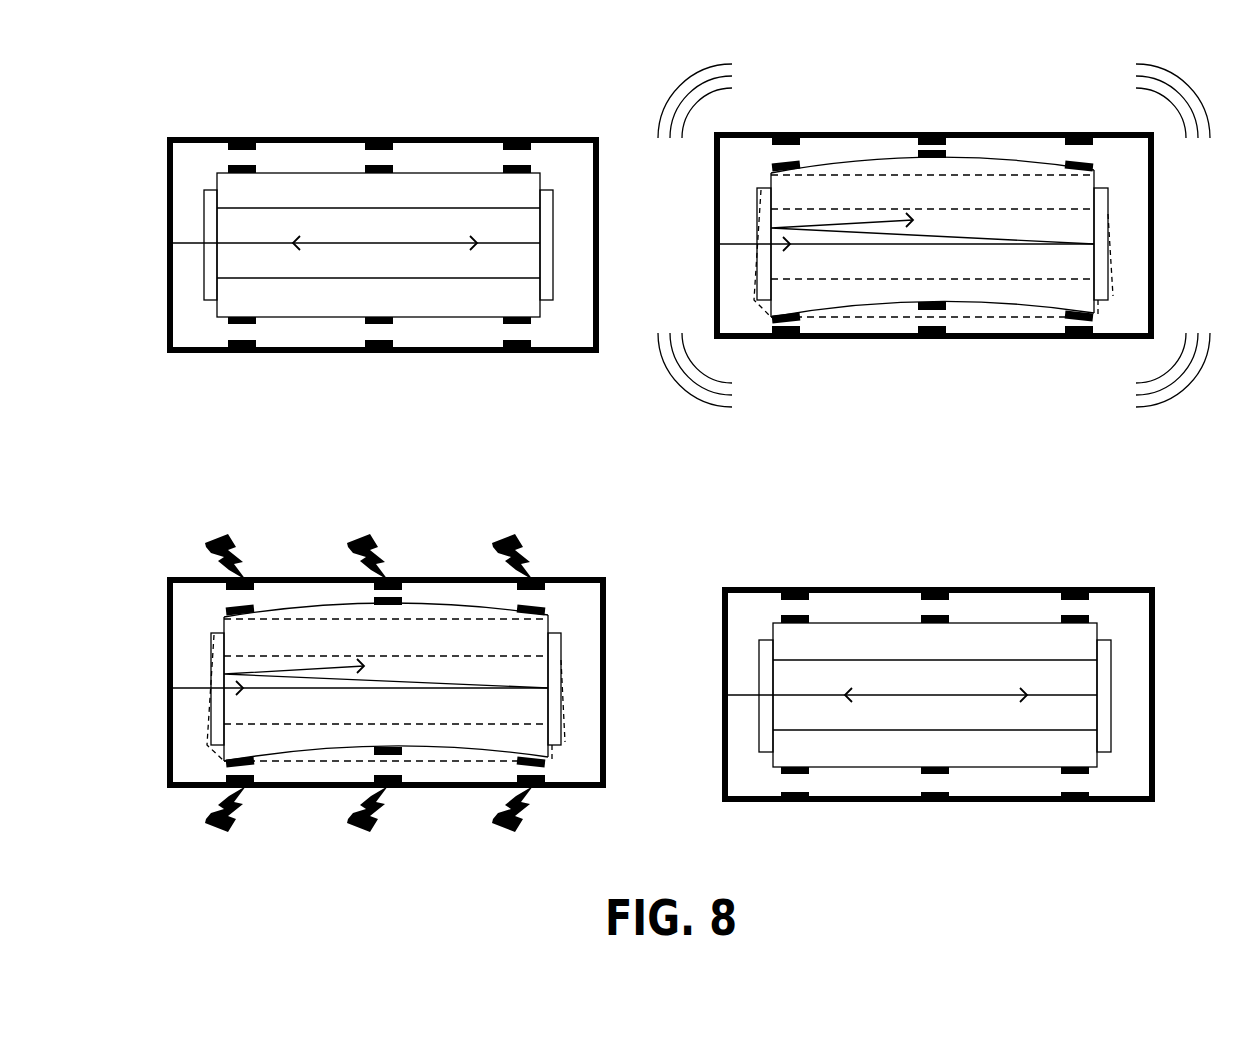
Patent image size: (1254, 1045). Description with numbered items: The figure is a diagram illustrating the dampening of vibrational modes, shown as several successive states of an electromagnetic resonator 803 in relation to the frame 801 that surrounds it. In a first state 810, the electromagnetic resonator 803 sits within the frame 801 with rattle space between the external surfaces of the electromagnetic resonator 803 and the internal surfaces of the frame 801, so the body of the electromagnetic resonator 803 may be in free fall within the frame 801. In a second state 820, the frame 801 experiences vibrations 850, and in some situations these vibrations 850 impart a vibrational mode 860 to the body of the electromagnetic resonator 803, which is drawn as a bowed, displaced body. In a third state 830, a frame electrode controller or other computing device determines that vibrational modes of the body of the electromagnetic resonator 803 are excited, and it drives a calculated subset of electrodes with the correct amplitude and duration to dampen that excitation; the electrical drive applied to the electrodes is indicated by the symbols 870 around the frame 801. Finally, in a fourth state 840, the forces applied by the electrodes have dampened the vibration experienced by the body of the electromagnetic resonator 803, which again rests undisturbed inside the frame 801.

The frame 801 is at (600, 254).
The electromagnetic resonator 803 is at (336, 318).
The first state 810 is at (189, 97).
The second state 820 is at (846, 76).
The third state 830 is at (194, 496).
The fourth state 840 is at (745, 553).
The vibrations 850 is at (1200, 96).
The vibrational mode 860 is at (760, 179).
The electrical excitation 870 is at (522, 558).